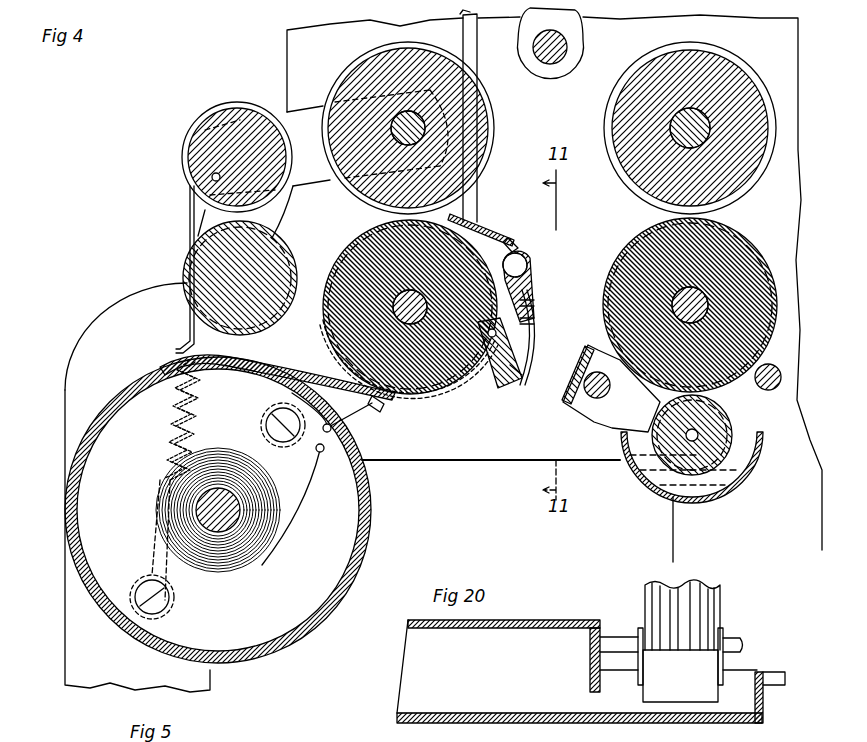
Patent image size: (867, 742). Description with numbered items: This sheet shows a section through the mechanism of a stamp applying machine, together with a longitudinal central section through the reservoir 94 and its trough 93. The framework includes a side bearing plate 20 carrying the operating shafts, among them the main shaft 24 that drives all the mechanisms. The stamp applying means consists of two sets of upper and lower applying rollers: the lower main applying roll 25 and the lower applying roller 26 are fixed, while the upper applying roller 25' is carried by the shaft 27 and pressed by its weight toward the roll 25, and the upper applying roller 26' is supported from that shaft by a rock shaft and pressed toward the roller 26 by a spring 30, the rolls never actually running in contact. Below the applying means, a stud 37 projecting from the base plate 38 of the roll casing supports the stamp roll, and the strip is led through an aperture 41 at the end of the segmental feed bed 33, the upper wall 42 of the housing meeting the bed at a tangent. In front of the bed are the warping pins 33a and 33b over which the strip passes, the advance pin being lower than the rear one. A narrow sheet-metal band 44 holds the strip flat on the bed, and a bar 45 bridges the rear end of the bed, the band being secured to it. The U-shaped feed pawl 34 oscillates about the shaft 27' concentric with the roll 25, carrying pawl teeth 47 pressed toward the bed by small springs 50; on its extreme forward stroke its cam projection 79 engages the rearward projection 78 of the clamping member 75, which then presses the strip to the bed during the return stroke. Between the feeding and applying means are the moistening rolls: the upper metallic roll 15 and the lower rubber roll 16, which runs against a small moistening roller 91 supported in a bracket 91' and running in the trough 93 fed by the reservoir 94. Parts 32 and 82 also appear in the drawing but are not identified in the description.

In FIG. 4, the bracket 82 is at (582, 22).
In FIG. 4, the side bearing plate 20 is at (798, 50).
In FIG. 4, the upper moistening roll 15 is at (730, 68).
In FIG. 4, the main shaft 24 is at (652, 240).
In FIG. 4, the lower moistening roll 16 is at (770, 318).
In FIG. 20, the lower moistening roll 16 is at (722, 609).
In FIG. 4, the upper applying roller 25' is at (423, 128).
In FIG. 4, the shaft 27 is at (459, 128).
In FIG. 4, the upper applying roller 26' is at (226, 157).
In FIG. 4, the lower applying roller 26 is at (223, 278).
In FIG. 4, the spring 30 is at (188, 333).
In FIG. 4, the lower main applying roll 25 is at (410, 303).
In FIG. 4, the shaft 27' is at (355, 316).
In FIG. 4, the band of sheet metal 44 is at (425, 400).
In FIG. 4, the bar 45 is at (415, 405).
In FIG. 4, the bar 32 is at (460, 225).
In FIG. 4, the feed bed 33 is at (516, 245).
In FIG. 4, the clamping member 75 is at (525, 270).
In FIG. 4, the cam projection 79 is at (535, 305).
In FIG. 4, the rearward projection 78 is at (535, 322).
In FIG. 4, the pawl teeth 47 is at (528, 350).
In FIG. 4, the small springs 50 is at (518, 370).
In FIG. 4, the feed pawl 34 is at (495, 385).
In FIG. 4, the upper wall 42 is at (380, 407).
In FIG. 4, the aperture 41 is at (370, 410).
In FIG. 4, the base plate 38 is at (218, 510).
In FIG. 4, the stud 37 is at (245, 517).
In FIG. 4, the warping pin 33b is at (315, 425).
In FIG. 4, the warping pin 33a is at (320, 450).
In FIG. 4, the bracket 91' is at (611, 394).
In FIG. 4, the trough 93 is at (740, 470).
In FIG. 20, the trough 93 is at (745, 678).
In FIG. 4, the moistening roller 91 is at (709, 435).
In FIG. 20, the moistening roller 91 is at (680, 665).
In FIG. 20, the reservoir 94 is at (507, 628).